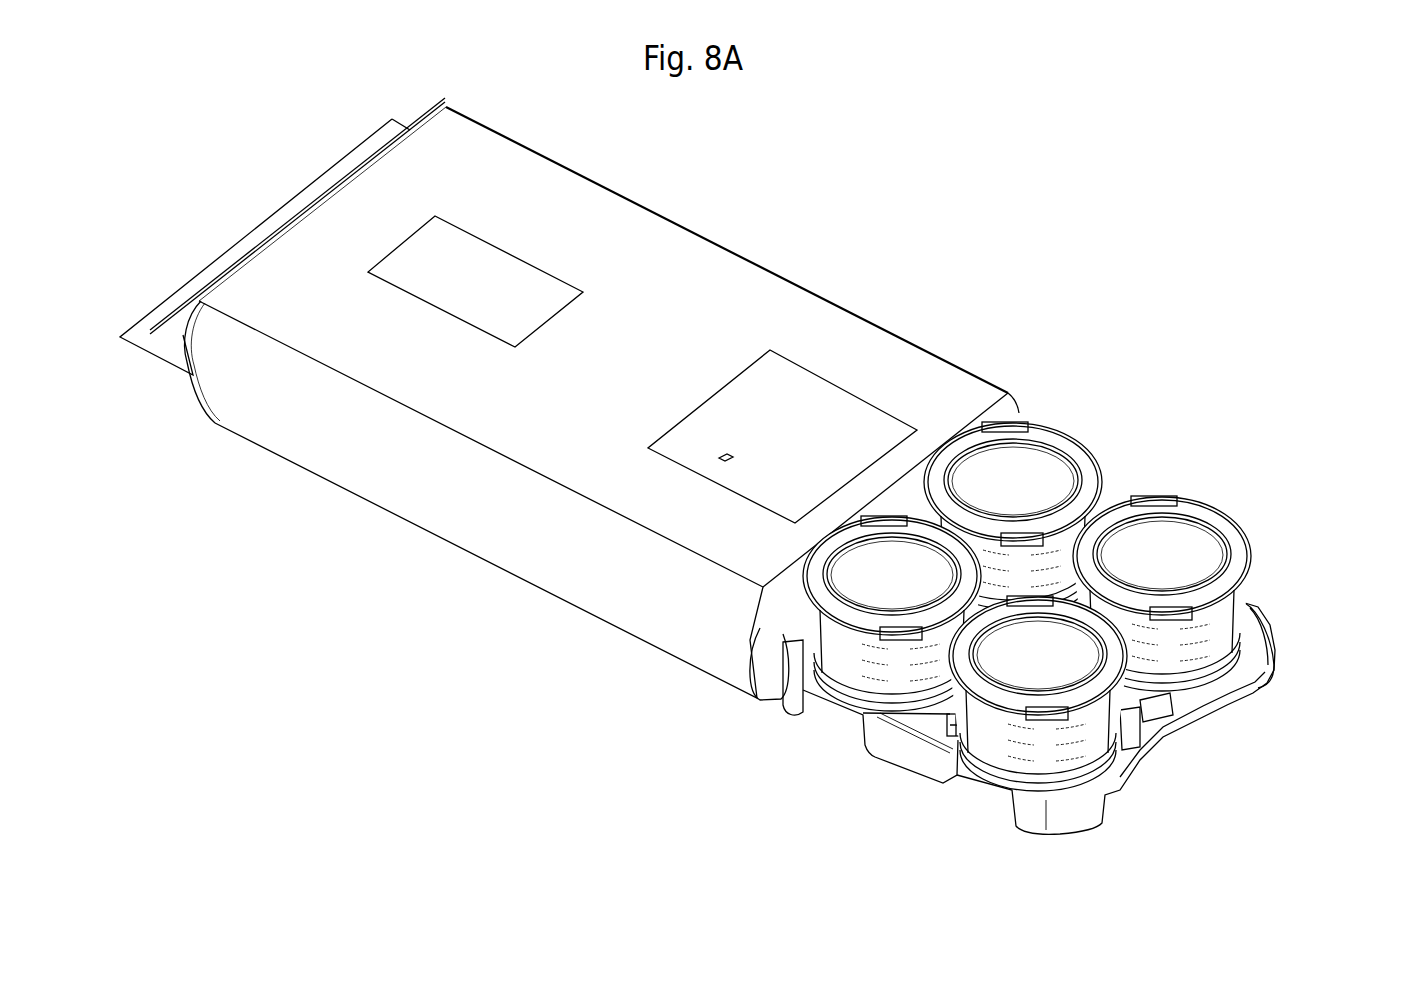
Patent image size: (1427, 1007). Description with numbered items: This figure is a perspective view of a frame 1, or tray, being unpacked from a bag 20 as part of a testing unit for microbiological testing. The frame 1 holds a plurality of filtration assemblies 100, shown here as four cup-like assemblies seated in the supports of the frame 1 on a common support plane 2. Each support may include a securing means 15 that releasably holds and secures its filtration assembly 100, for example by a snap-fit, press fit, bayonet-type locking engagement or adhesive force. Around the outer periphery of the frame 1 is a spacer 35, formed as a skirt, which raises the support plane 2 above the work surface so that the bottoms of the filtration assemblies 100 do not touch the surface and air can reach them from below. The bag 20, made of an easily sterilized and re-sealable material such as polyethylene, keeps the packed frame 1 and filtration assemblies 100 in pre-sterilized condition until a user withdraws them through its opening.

The bag 20 is at (300, 327).
The filtration assembly 100 is at (1148, 503).
The frame 1 is at (1086, 675).
The spacer 35 is at (1262, 675).
The support plane 2 is at (1130, 695).
The securing means 15 is at (953, 727).